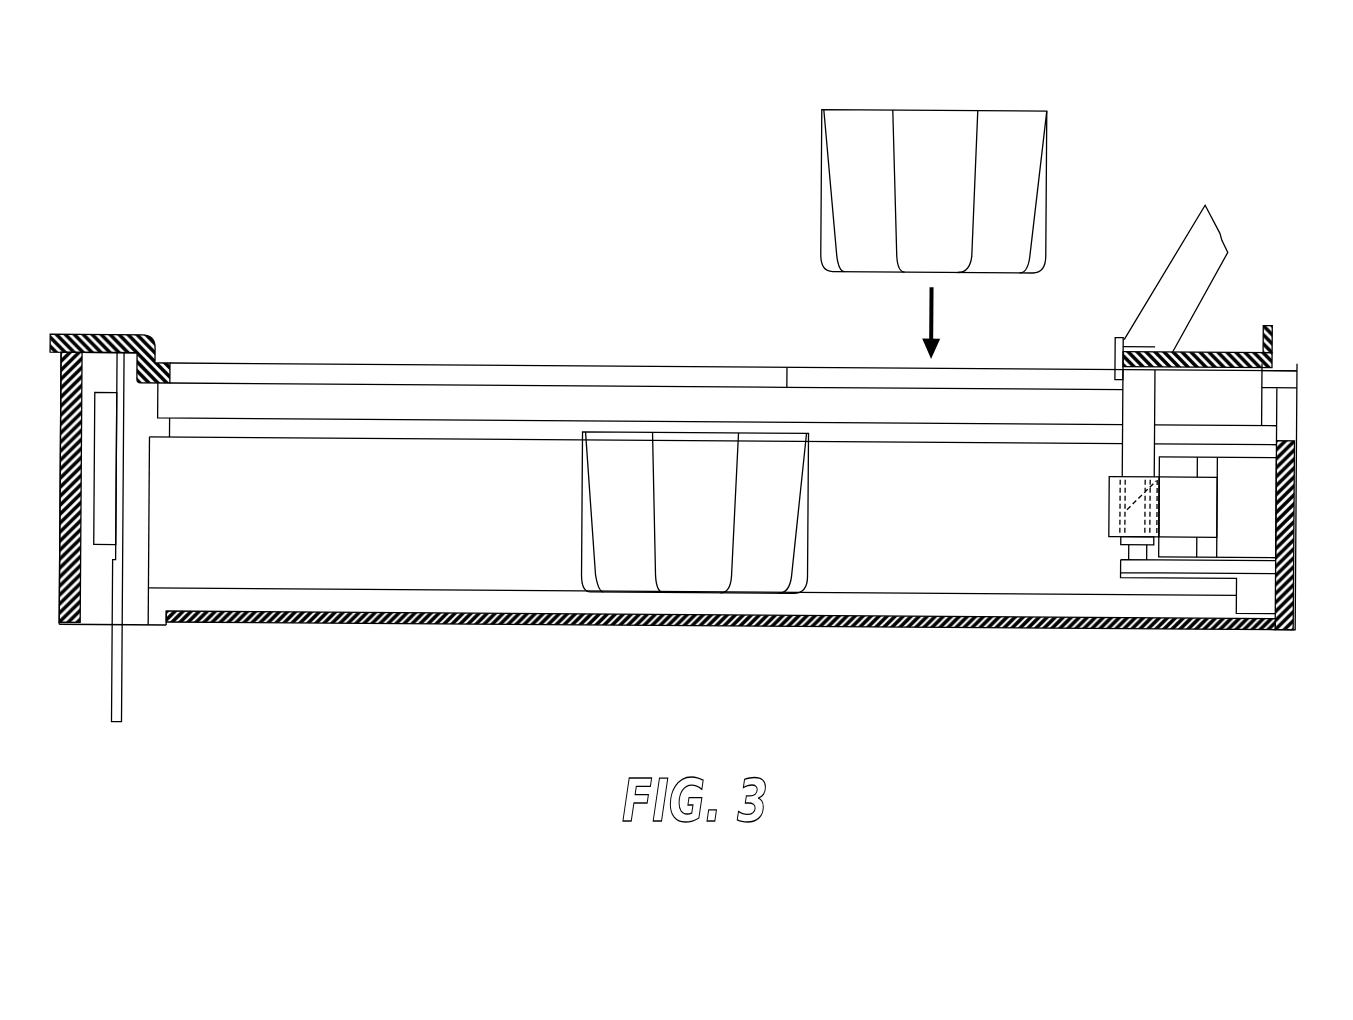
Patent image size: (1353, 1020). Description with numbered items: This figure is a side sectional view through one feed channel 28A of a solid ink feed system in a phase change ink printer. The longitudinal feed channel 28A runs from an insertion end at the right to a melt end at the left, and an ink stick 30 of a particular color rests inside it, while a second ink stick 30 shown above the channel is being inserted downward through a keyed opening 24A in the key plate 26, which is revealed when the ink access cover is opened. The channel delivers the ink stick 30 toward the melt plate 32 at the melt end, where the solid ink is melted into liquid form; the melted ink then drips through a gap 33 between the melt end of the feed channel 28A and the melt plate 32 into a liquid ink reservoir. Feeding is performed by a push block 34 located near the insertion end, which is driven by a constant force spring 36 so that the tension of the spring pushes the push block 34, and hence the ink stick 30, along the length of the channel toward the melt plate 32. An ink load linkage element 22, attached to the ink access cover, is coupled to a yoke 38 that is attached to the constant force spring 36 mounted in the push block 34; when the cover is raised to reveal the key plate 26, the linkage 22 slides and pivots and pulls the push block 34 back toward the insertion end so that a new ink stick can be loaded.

The ink stick 30 is at (945, 106).
The ink load linkage element 22 is at (1167, 273).
The yoke 38 is at (1122, 403).
The keyed opening 24A is at (850, 375).
The key plate 26 is at (435, 361).
The feed channel 28A is at (219, 469).
The melt plate 32 is at (112, 653).
The gap 33 is at (142, 618).
The push block 34 is at (1122, 541).
The constant force spring 36 is at (1199, 500).